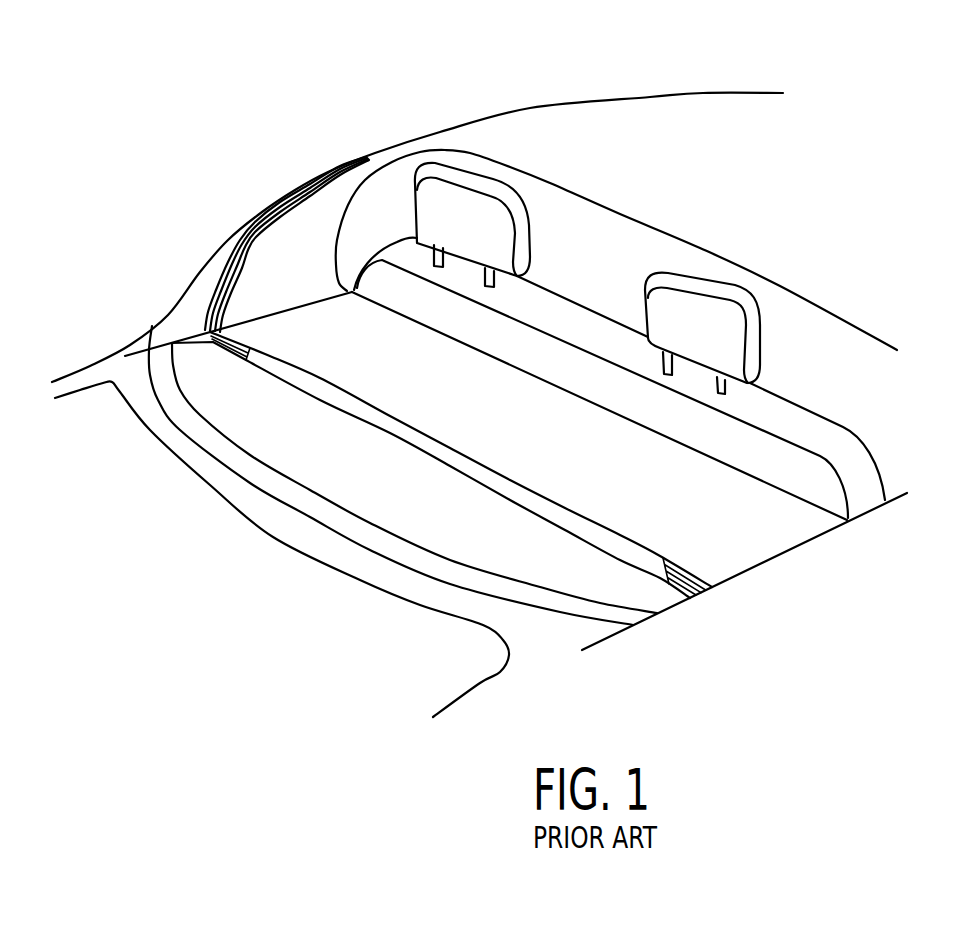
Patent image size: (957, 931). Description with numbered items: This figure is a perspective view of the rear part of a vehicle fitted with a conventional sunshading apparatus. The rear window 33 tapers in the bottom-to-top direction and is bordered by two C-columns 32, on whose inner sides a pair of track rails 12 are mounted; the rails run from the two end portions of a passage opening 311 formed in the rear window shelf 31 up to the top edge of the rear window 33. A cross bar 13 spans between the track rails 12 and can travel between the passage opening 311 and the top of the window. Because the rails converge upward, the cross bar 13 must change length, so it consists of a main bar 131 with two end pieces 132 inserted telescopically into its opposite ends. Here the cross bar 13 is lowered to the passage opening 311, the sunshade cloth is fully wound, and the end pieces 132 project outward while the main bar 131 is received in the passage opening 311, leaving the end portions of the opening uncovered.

The track rails 12 is at (280, 206).
The cross bar 13 is at (451, 517).
The main bar 131 is at (373, 417).
The end pieces 132 is at (243, 350).
The rear window shelf 31 is at (191, 328).
The passage opening 311 is at (153, 347).
The C-columns 32 is at (230, 248).
The rear window 33 is at (557, 222).